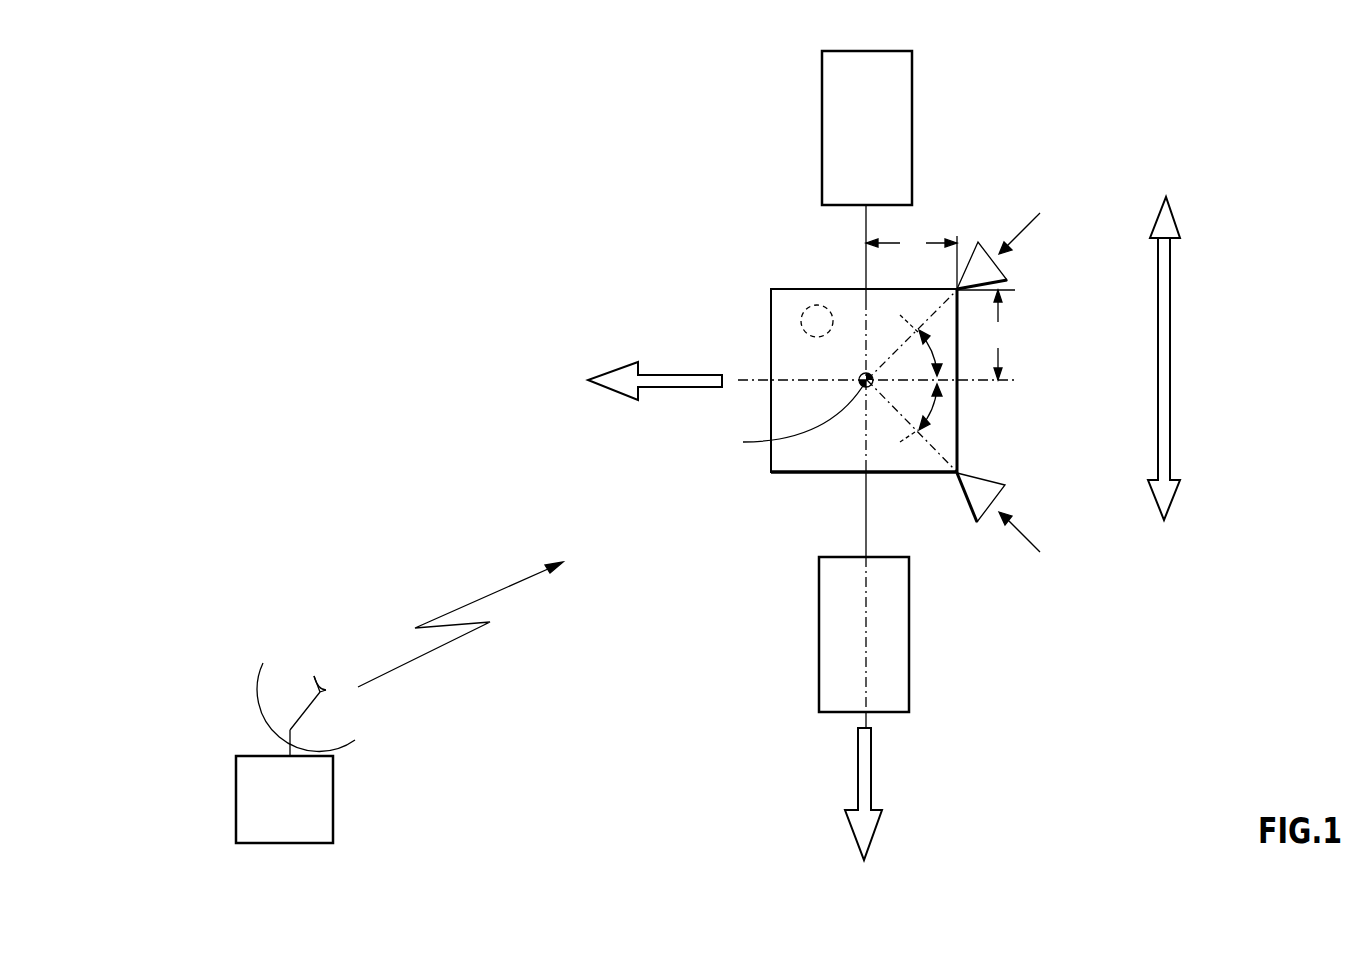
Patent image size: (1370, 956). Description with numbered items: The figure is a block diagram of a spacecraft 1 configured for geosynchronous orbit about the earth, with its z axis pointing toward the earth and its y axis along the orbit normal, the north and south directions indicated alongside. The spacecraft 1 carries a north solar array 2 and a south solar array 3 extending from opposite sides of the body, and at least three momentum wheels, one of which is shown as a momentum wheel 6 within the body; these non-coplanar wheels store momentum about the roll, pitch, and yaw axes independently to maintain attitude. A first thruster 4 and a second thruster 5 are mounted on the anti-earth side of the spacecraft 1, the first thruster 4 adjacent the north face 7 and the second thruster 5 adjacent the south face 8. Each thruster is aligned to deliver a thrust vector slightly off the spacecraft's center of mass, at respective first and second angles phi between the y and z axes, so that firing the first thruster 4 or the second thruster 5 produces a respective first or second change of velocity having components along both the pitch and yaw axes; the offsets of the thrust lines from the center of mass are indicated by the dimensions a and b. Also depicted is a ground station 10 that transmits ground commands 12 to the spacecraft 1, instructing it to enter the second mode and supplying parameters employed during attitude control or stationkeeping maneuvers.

The spacecraft 1 is at (618, 196).
The north solar array 2 is at (867, 128).
The south solar array 3 is at (864, 634).
The first thruster 4 is at (1003, 269).
The second thruster 5 is at (990, 478).
The momentum wheel 6 is at (800, 317).
The north face 7 is at (818, 288).
The south face 8 is at (818, 473).
The ground station 10 is at (335, 802).
The ground commands 12 is at (478, 631).